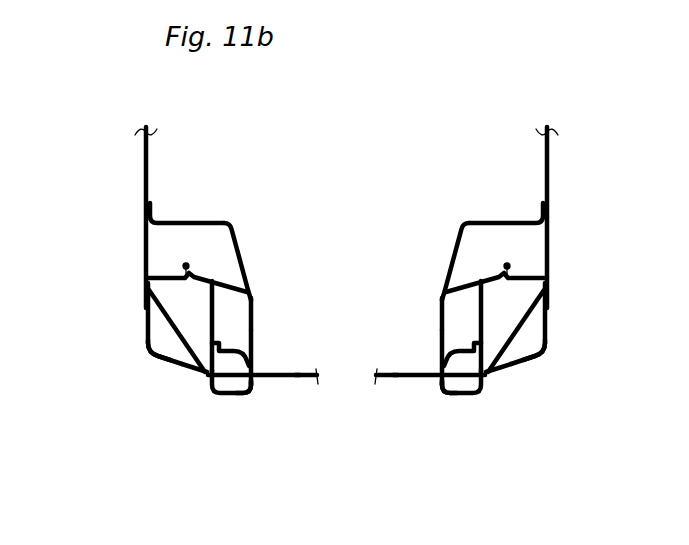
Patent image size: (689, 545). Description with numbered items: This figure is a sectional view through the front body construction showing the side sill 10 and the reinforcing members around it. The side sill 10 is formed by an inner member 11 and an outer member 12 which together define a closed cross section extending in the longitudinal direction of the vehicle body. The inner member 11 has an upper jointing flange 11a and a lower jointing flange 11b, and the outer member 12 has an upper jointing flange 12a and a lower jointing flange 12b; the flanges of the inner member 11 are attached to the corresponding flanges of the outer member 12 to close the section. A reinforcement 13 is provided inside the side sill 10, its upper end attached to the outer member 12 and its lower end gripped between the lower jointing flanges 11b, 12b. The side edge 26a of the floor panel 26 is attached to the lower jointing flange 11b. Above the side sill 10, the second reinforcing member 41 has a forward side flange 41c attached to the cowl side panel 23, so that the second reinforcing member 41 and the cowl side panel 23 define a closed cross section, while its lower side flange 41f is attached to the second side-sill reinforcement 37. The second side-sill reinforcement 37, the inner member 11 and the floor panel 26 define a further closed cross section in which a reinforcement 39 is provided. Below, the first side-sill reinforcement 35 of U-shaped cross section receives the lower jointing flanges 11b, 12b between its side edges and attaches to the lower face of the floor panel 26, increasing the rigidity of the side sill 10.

The cowl side panel 23 is at (144, 161).
The forward side flange 41c is at (152, 210).
The second reinforcing member 41 is at (454, 228).
The lower side flange 41f is at (256, 303).
The inner member 11 is at (446, 296).
The upper jointing flange 11a is at (188, 265).
The lower jointing flange 11b is at (214, 378).
The upper jointing flange 12a is at (185, 265).
The outer member 12 is at (148, 356).
The lower jointing flange 12b is at (209, 372).
The side sill 10 is at (146, 341).
The reinforcement 13 is at (181, 350).
The second side-sill reinforcement 37 is at (434, 337).
The reinforcement 39 is at (436, 354).
The first side-sill reinforcement 35 is at (222, 397).
The floor panel 26 is at (300, 381).
The side edge 26a is at (248, 396).